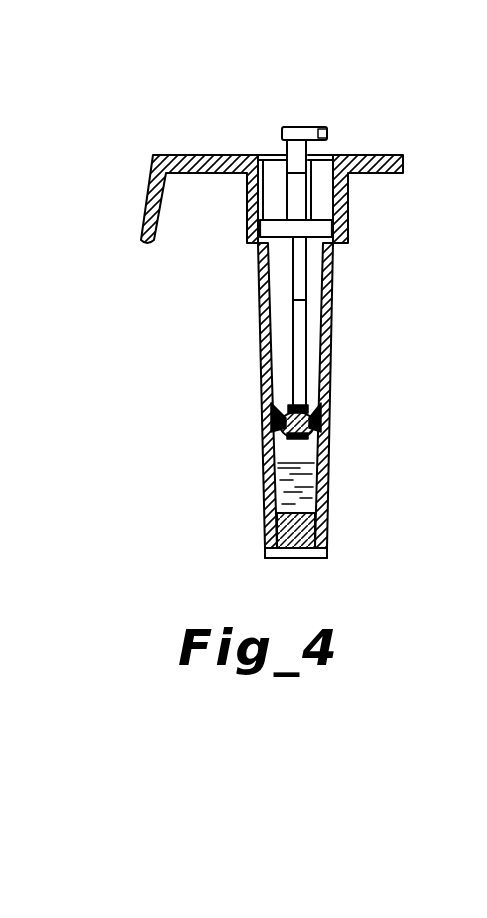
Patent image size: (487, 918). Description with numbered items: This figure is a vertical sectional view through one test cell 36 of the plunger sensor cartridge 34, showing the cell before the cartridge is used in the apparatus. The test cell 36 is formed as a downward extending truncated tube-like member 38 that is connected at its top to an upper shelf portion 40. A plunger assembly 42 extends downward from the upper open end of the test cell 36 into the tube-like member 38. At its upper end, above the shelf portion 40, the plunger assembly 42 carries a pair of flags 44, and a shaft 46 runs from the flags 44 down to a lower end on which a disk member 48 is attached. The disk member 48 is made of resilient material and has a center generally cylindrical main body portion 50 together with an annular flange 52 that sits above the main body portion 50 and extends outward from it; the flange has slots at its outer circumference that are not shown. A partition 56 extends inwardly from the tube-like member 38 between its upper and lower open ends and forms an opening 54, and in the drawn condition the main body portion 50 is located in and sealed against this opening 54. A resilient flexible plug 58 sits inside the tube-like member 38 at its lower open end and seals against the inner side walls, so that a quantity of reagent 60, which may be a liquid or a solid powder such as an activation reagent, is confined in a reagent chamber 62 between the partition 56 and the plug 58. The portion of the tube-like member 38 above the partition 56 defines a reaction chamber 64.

The cartridge 34 is at (196, 103).
The test cell 36 is at (192, 480).
The tube-like member 38 is at (262, 333).
The upper shelf portion 40 is at (202, 157).
The plunger assembly 42 is at (318, 134).
The flags 44 is at (305, 127).
The shaft 46 is at (300, 293).
The disk member 48 is at (277, 397).
The main body portion 50 is at (328, 410).
The annular flange 52 is at (327, 402).
The opening 54 is at (266, 428).
The partition 56 is at (330, 428).
The plug 58 is at (273, 540).
The reagent 60 is at (279, 486).
The reagent chamber 62 is at (317, 498).
The reaction chamber 64 is at (321, 362).